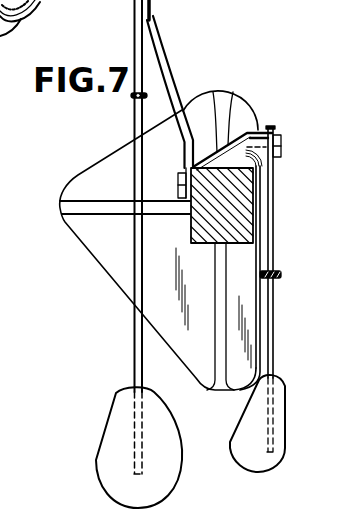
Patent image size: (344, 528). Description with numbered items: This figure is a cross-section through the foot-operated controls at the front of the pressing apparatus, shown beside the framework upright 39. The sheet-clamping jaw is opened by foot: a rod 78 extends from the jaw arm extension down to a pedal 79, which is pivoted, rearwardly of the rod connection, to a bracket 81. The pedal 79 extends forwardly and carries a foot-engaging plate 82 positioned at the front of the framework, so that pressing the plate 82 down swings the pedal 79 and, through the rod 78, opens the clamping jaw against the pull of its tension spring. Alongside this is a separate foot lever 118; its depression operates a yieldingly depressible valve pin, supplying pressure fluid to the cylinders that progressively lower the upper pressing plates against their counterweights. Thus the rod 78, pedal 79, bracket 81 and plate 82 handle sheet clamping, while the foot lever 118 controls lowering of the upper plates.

The framework upright 39 is at (196, 222).
The rod 78 is at (132, 97).
The pedal 79 is at (134, 127).
The bracket 81 is at (172, 83).
The foot-engaging plate 82 is at (116, 409).
The foot lever 118 is at (253, 459).